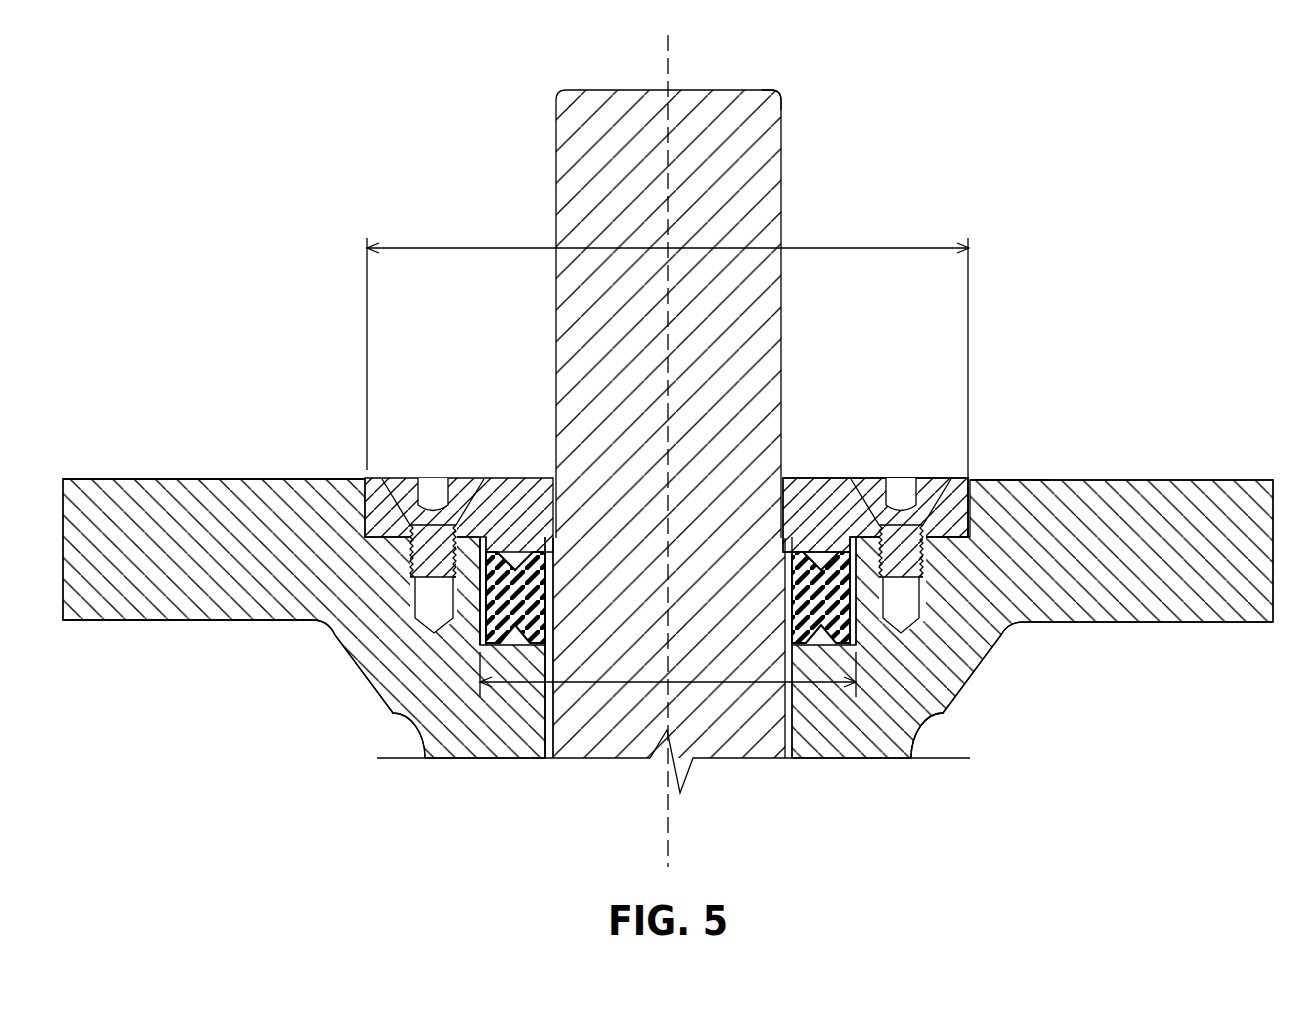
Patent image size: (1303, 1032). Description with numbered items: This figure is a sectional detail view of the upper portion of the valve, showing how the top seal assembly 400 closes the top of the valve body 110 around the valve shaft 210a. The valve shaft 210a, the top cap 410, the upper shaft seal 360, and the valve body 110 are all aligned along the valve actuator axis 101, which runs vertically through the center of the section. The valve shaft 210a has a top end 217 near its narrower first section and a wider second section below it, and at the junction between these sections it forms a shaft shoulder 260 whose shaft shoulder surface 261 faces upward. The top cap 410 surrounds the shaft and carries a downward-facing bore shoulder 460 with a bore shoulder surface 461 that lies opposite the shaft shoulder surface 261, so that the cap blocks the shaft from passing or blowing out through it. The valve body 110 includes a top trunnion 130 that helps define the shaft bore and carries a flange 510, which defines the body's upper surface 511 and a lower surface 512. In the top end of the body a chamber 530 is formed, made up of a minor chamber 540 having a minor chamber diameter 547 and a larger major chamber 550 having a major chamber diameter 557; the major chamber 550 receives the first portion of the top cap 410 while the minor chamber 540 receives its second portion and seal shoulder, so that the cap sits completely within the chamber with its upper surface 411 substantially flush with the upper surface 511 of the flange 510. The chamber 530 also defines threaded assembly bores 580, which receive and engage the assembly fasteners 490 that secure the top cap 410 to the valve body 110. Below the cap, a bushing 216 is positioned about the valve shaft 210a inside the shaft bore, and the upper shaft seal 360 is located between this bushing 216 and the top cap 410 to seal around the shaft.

The valve actuator axis 101 is at (667, 57).
The valve body 110 is at (967, 680).
The top trunnion 130 is at (910, 734).
The valve shaft 210a is at (783, 165).
The bushing 216 is at (798, 700).
The top end 217 is at (747, 90).
The shaft shoulder 260 is at (514, 499).
The shaft shoulder surface 261 is at (533, 477).
The upper shaft seal 360 is at (670, 679).
The top seal assembly 400 is at (517, 477).
The top cap 410 is at (827, 480).
The upper surface 411 is at (803, 470).
The bore shoulder 460 is at (770, 522).
The bore shoulder surface 461 is at (787, 548).
The assembly fasteners 490 is at (395, 478).
The flange 510 is at (125, 622).
The upper surface 511 is at (137, 476).
The lower surface 512 is at (212, 624).
The chamber 530 is at (1056, 472).
The minor chamber 540 is at (477, 635).
The minor chamber diameter 547 is at (603, 683).
The major chamber 550 is at (995, 483).
The major chamber diameter 557 is at (478, 248).
The assembly bores 580 is at (485, 628).